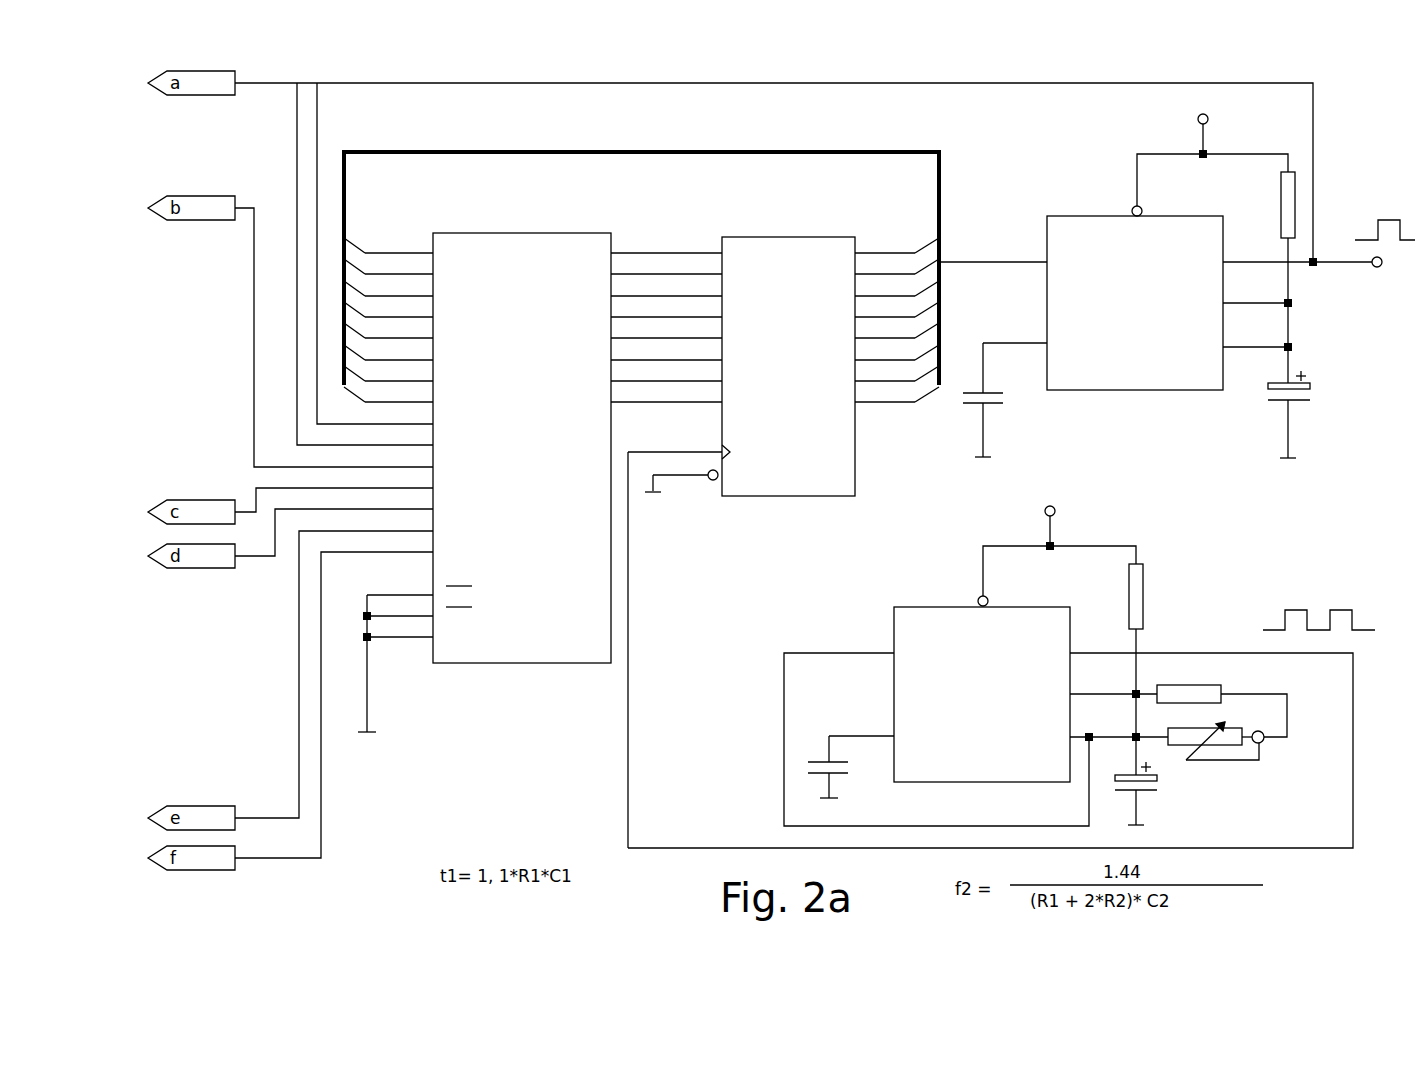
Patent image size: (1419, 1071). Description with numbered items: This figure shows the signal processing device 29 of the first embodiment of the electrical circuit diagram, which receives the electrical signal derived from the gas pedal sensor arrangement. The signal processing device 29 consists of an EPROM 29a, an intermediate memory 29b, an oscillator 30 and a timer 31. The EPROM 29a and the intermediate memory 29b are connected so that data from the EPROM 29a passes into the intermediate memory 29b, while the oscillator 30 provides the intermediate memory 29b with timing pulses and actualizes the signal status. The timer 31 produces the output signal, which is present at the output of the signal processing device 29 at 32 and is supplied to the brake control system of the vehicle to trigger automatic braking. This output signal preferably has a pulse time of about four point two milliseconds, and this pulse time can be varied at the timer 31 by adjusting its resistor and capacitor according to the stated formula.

The signal processing device 29 is at (698, 149).
The EPROM 29a is at (512, 248).
The intermediate memory 29b is at (791, 253).
The oscillator 30 is at (917, 614).
The timer 31 is at (1197, 378).
The output 32 is at (1380, 268).